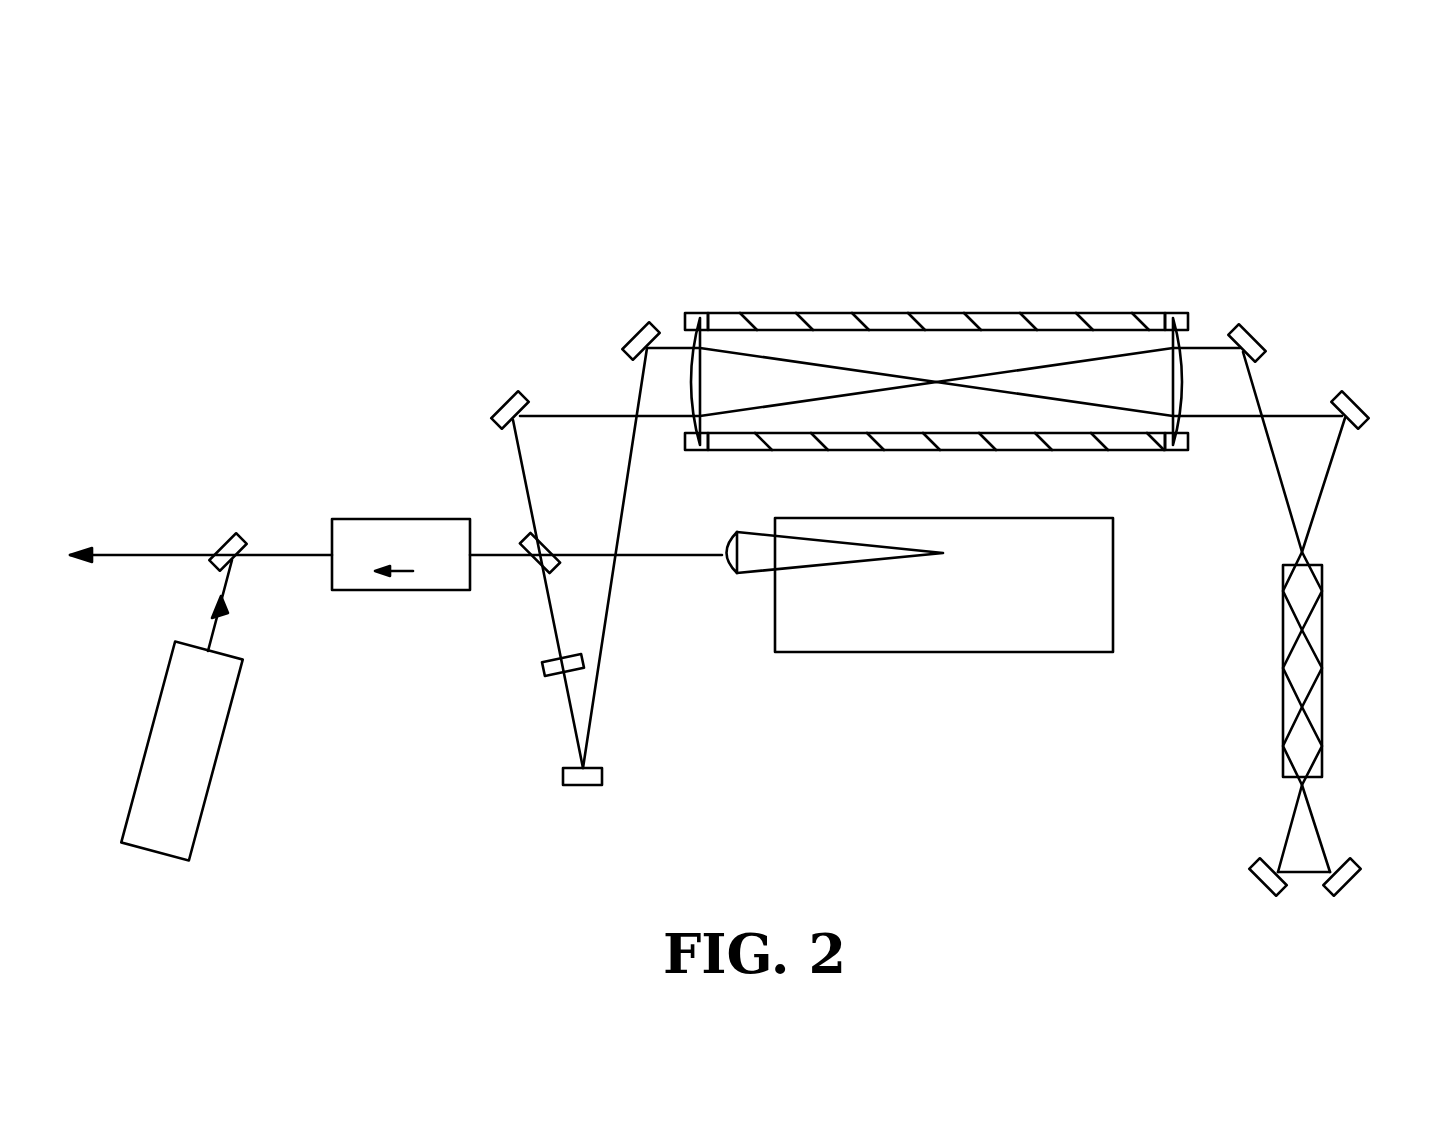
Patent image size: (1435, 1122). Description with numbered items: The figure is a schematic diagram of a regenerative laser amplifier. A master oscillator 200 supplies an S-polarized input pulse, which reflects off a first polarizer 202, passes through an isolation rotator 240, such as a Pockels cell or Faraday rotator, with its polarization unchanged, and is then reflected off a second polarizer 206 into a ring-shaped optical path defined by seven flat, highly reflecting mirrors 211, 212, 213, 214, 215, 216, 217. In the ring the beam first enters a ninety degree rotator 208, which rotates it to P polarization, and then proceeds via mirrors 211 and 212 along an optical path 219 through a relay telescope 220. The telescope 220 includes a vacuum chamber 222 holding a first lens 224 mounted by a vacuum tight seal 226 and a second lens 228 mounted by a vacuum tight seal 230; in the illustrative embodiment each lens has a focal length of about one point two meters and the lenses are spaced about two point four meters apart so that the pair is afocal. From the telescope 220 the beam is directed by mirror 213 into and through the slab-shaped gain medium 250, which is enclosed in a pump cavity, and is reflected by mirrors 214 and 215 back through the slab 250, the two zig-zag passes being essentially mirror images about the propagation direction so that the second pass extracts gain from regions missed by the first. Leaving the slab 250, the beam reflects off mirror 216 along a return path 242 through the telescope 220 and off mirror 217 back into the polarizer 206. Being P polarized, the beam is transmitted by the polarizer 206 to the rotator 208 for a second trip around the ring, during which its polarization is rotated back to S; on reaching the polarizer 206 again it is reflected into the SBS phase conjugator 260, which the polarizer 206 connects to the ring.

The master oscillator 200 is at (232, 727).
The polarizer 202 is at (222, 530).
The polarizer 206 is at (534, 566).
The 90 degree rotator 208 is at (545, 668).
The mirror 211 is at (563, 778).
The mirror 212 is at (634, 336).
The mirror 213 is at (1357, 400).
The mirror 214 is at (1352, 888).
The mirror 215 is at (1258, 890).
The mirror 216 is at (1258, 335).
The mirror 217 is at (500, 404).
The optical path 219 is at (777, 358).
The relay telescope 220 is at (943, 243).
The vacuum chamber 222 is at (862, 313).
The first lens 224 is at (684, 382).
The vacuum tight seal 226 is at (703, 312).
The second lens 228 is at (1171, 384).
The vacuum tight seal 230 is at (1177, 312).
The rotator 240 is at (392, 518).
The path 242 is at (1058, 365).
The slab-shaped gain medium 250 is at (1323, 624).
The SBS phase conjugator 260 is at (893, 652).